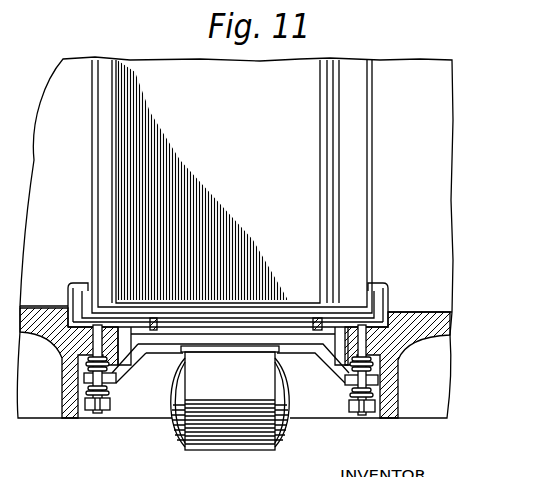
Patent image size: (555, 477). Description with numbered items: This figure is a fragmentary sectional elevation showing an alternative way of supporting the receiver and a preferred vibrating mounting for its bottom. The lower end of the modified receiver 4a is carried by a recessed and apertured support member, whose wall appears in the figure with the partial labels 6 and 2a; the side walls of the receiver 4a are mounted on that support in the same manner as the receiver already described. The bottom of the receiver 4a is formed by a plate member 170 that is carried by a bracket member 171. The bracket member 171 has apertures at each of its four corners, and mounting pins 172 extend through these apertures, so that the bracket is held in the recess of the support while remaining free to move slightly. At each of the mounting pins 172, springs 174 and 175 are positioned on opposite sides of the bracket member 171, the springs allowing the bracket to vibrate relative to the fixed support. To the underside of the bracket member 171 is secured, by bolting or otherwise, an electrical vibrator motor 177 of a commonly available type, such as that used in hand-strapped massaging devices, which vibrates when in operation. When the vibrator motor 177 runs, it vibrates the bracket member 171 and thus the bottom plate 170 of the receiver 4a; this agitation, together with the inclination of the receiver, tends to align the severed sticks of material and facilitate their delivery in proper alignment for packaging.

The frame 6 is at (226, 170).
The modified receiver 4a is at (89, 205).
The casing 2a is at (24, 333).
The bottom plate member 170 is at (215, 316).
The bracket member 171 is at (262, 336).
The mounting pins 172 is at (101, 414).
The springs 174 is at (105, 392).
The springs 175 is at (112, 380).
The vibrator motor 177 is at (230, 398).